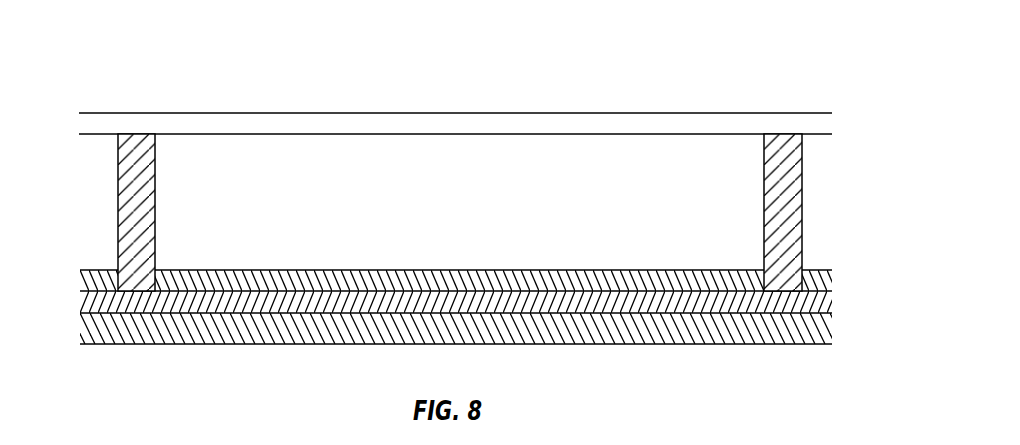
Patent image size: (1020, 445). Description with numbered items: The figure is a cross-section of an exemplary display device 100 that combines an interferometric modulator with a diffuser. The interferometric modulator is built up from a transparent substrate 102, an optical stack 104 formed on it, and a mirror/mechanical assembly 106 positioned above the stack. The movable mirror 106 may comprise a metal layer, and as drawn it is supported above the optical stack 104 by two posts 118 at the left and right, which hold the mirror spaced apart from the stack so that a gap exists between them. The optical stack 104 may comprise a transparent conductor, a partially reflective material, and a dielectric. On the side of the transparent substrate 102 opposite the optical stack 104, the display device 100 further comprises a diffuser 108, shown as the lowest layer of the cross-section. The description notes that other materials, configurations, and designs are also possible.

The display device 100 is at (127, 62).
The mirror/mechanical assembly 106 is at (817, 124).
The optical stack 104 is at (822, 282).
The transparent substrate 102 is at (820, 300).
The diffuser 108 is at (822, 332).
The posts 118 is at (128, 216).